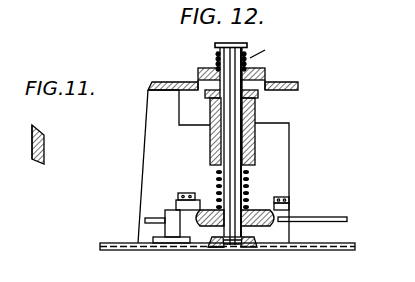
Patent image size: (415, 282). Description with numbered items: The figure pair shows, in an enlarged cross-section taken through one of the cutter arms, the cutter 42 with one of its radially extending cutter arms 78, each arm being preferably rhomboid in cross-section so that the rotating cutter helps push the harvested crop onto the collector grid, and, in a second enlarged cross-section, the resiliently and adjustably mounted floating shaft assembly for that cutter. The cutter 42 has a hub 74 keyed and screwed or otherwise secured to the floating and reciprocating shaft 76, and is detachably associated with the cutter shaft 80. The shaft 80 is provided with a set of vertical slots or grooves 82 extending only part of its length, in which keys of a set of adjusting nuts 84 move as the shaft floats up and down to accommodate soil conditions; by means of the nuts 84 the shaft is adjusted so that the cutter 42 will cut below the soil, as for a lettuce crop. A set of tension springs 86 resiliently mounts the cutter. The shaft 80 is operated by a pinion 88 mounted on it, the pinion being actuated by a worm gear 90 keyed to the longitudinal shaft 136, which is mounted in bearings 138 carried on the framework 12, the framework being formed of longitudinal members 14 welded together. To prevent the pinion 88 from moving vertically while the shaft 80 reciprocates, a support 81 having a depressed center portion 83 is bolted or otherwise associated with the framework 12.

In FIG. 12, the framework 12 is at (288, 168).
In FIG. 12, the longitudinal members 14 is at (141, 178).
In FIG. 11, the cutter 42 is at (45, 150).
In FIG. 12, the hub 74 is at (245, 251).
In FIG. 12, the floating and reciprocating shaft 76 is at (289, 141).
In FIG. 11, the cutter arms 78 is at (40, 135).
In FIG. 12, the cutter shaft 80 is at (232, 147).
In FIG. 12, the support 81 is at (290, 205).
In FIG. 12, the vertical slots or grooves 82 is at (208, 104).
In FIG. 12, the depressed center portion 83 is at (265, 220).
In FIG. 12, the adjusting nuts 84 is at (249, 45).
In FIG. 12, the tension springs 86 is at (249, 197).
In FIG. 12, the pinion 88 is at (230, 251).
In FIG. 12, the worm gear 90 is at (213, 238).
In FIG. 12, the longitudinal shaft 136 is at (326, 216).
In FIG. 12, the bearings 138 is at (172, 210).